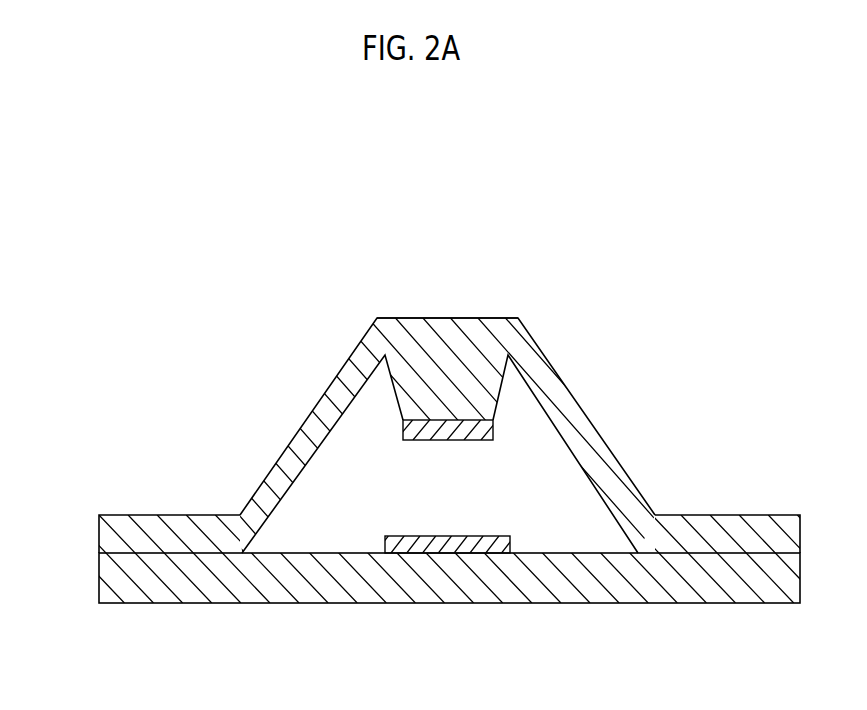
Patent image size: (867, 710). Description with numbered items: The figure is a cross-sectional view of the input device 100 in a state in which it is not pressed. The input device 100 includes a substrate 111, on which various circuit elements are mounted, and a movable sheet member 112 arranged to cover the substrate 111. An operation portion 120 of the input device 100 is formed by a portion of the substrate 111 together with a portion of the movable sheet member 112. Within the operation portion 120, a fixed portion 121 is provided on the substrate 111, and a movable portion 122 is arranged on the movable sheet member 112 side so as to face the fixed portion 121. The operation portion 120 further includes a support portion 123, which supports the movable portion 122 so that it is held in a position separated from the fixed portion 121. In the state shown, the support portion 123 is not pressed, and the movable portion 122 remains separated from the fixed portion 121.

The input device 100 is at (150, 294).
The substrate 111 is at (133, 597).
The movable sheet member 112 is at (150, 527).
The operation portion 120 is at (305, 428).
The fixed portion 121 is at (418, 542).
The movable portion 122 is at (493, 456).
The support portion 123 is at (528, 337).